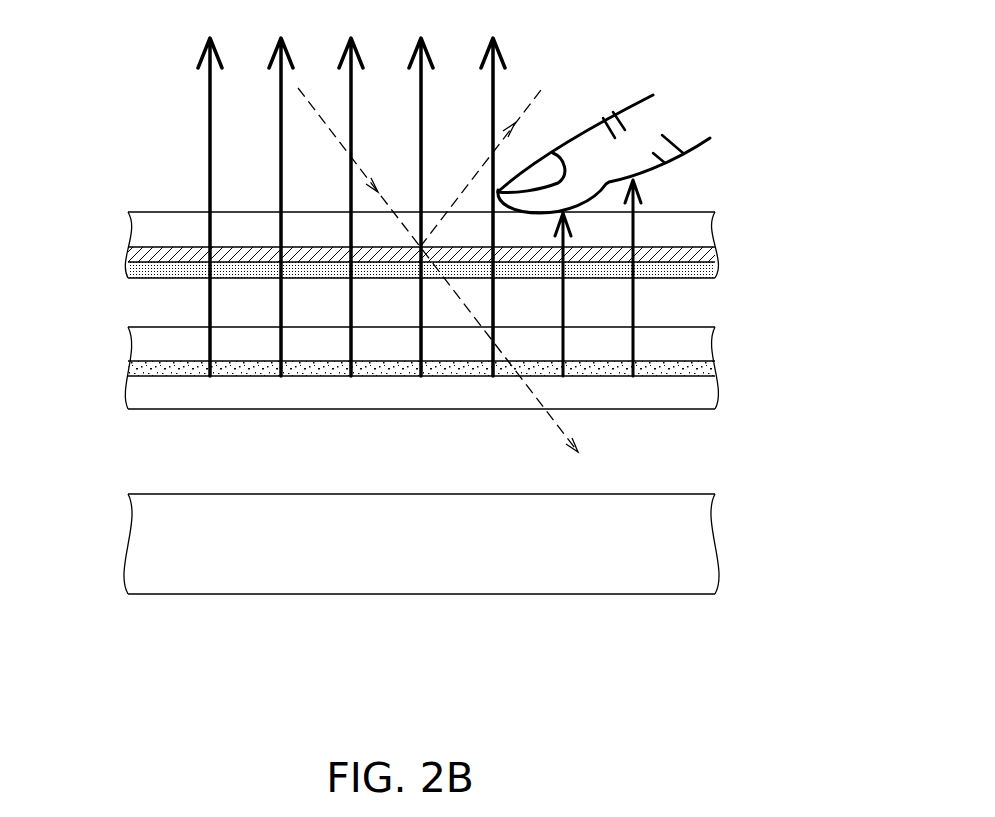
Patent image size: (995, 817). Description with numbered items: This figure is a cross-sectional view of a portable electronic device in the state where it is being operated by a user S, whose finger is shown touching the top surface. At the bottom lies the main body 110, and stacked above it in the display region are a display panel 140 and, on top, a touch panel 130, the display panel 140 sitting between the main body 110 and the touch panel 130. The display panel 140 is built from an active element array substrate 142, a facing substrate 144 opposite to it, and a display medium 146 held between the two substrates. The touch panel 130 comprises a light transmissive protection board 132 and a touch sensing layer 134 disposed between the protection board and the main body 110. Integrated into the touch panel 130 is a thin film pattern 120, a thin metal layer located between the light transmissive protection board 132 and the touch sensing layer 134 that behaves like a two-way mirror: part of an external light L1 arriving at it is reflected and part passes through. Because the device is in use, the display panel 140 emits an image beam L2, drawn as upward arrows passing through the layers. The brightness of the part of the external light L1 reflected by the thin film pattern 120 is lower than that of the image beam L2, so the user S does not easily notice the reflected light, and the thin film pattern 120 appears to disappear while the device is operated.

The main body 110 is at (167, 550).
The thin film pattern 120 is at (716, 256).
The touch panel 130 is at (66, 216).
The light transmissive protection board 132 is at (158, 230).
The touch sensing layer 134 is at (158, 268).
The display panel 140 is at (66, 318).
The active element array substrate 142 is at (148, 398).
The facing substrate 144 is at (153, 343).
The display medium 146 is at (148, 367).
The external light L1 is at (311, 101).
The image beam L2 is at (208, 155).
The user S is at (700, 147).